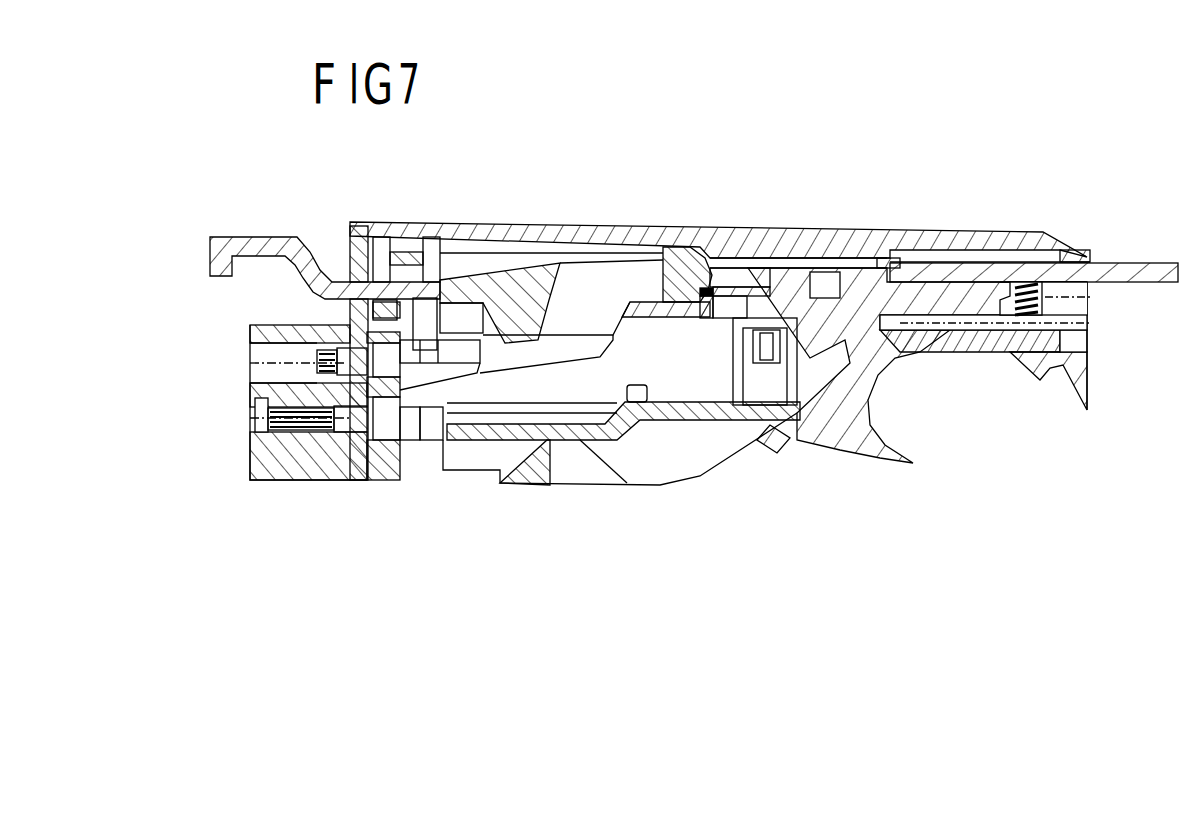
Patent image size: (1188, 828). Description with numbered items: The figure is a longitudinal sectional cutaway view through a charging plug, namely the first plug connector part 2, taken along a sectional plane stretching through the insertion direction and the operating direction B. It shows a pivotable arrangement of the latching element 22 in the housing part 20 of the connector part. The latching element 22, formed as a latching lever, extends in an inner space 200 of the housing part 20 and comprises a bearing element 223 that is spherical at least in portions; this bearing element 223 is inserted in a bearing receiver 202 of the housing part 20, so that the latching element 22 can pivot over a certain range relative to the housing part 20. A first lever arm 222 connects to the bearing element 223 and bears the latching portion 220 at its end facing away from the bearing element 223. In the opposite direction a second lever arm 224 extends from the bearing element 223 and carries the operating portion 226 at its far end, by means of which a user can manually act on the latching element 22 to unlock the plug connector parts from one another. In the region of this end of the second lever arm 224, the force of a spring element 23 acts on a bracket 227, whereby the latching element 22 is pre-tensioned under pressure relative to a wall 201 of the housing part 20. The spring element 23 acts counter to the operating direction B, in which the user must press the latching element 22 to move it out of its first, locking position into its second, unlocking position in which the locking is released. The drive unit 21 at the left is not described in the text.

The first plug connector part 2 is at (715, 210).
The housing part 20 is at (803, 263).
The drive unit 21 is at (262, 336).
The latching element 22 is at (452, 258).
The spring element 23 is at (1040, 306).
The inner space 200 is at (510, 248).
The wall 201 is at (968, 345).
The bearing receiver 202 is at (688, 268).
The latching portion 220 is at (220, 266).
The first lever arm 222 is at (572, 272).
The bearing element 223 is at (676, 285).
The second lever arm 224 is at (768, 300).
The operating portion 226 is at (1152, 266).
The bracket 227 is at (1024, 283).
The operating direction B is at (1114, 250).